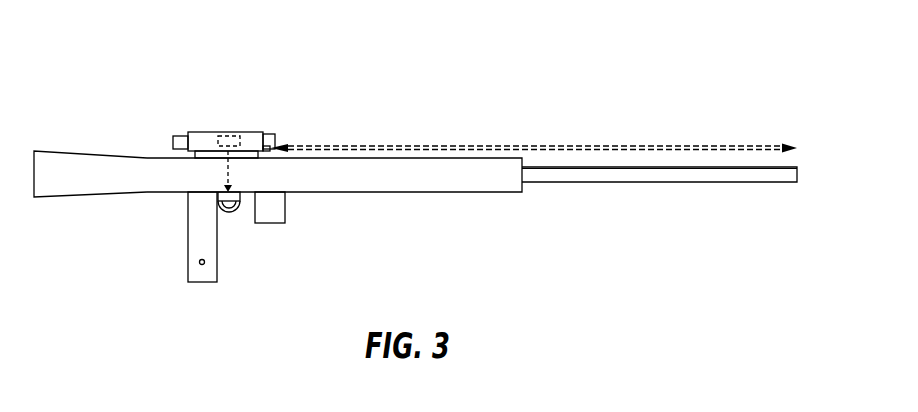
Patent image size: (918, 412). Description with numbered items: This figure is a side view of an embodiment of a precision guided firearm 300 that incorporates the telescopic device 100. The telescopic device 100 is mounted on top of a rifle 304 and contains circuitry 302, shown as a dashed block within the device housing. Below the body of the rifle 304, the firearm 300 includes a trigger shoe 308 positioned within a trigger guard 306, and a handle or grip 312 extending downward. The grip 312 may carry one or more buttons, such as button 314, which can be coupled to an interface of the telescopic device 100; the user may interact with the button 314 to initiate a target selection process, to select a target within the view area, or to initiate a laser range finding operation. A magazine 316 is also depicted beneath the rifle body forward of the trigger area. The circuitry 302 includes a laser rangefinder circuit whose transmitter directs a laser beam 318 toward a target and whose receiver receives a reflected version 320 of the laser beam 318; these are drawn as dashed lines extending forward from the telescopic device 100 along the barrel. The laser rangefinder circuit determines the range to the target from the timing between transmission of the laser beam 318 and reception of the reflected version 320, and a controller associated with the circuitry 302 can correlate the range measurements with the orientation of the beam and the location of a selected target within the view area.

The firearm 300 is at (100, 20).
The telescopic device 100 is at (207, 133).
The circuitry 302 is at (232, 134).
The rifle 304 is at (123, 155).
The trigger guard 306 is at (227, 197).
The trigger shoe 308 is at (228, 205).
The handle or grip 312 is at (188, 235).
The button 314 is at (200, 260).
The magazine 316 is at (285, 210).
The laser beam 318 is at (560, 148).
The reflected version of laser beam 320 is at (542, 148).